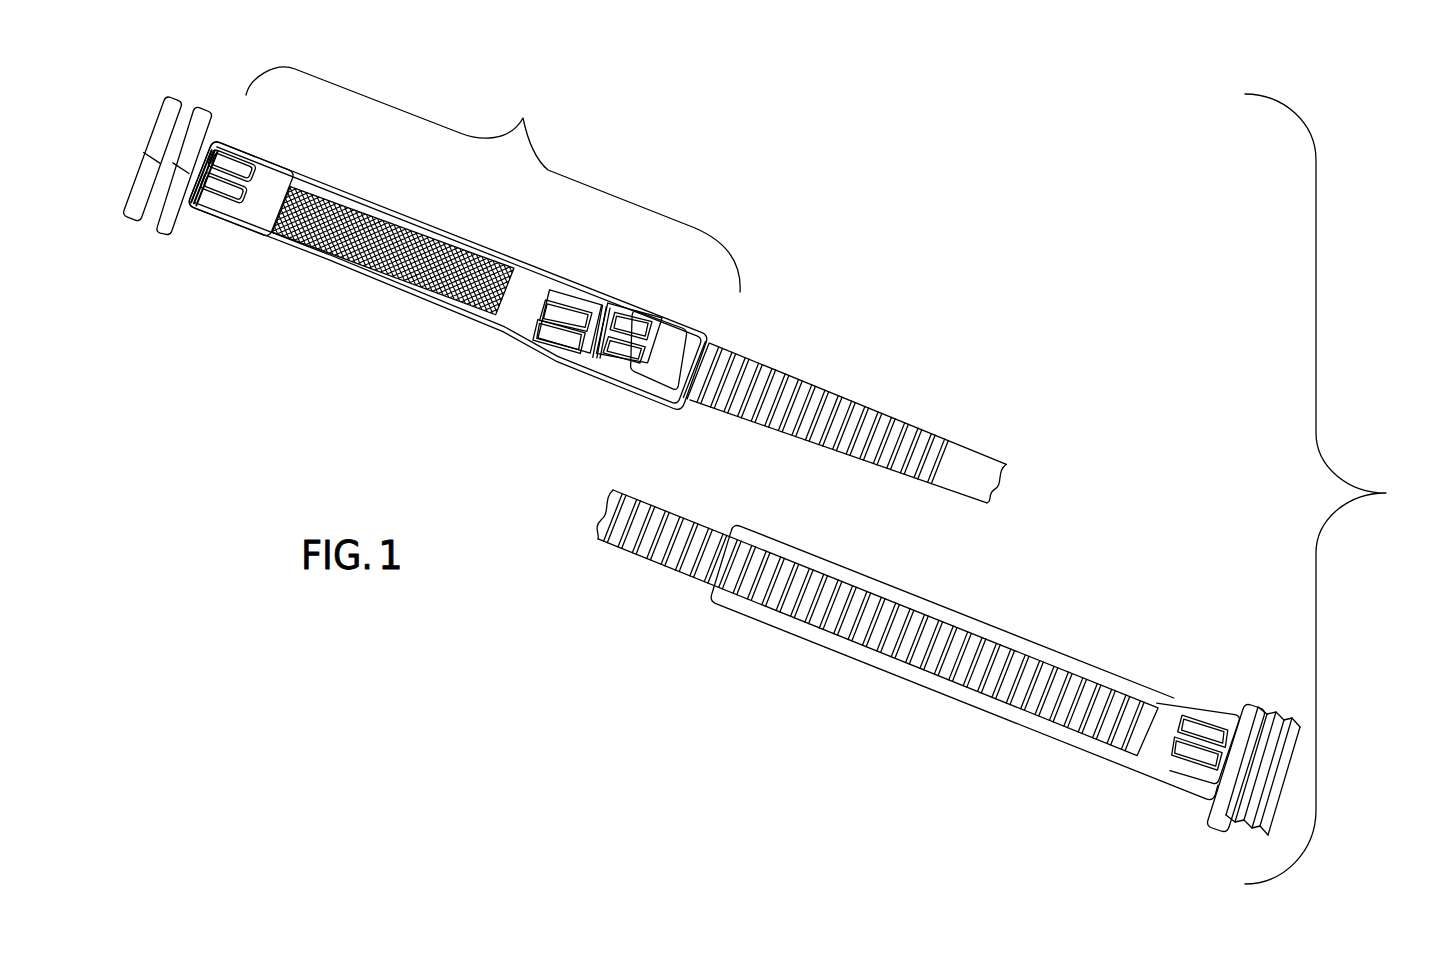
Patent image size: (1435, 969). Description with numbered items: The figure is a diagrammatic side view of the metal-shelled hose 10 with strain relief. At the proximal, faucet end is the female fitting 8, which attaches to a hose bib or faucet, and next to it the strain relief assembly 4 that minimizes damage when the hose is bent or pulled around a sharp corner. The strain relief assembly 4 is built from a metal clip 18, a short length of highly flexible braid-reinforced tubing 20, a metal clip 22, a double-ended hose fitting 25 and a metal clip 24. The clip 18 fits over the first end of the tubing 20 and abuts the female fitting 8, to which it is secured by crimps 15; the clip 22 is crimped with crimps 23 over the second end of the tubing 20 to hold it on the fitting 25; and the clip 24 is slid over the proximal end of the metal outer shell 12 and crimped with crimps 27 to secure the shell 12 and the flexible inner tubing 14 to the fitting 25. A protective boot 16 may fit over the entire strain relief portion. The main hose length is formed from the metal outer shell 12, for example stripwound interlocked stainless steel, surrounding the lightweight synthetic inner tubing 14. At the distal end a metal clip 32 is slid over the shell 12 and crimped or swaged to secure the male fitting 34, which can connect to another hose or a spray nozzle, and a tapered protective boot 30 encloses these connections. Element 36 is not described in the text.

The strain relief assembly 4 is at (538, 110).
The female fitting 8 is at (153, 203).
The metal-shelled hose 10 is at (1425, 502).
The metal outer shell 12 is at (797, 407).
The inner tubing 14 is at (973, 463).
The crimps 15 is at (215, 203).
The protective boot 16 is at (403, 218).
The metal clip 18 is at (267, 203).
The flexible tubing 20 is at (323, 238).
The metal clip 22 is at (513, 320).
The crimps 23 is at (578, 292).
The metal clip 24 is at (662, 338).
The double-ended hose fitting 25 is at (592, 338).
The crimps 27 is at (628, 318).
The protective boot 30 is at (753, 612).
The metal clip 32 is at (1158, 738).
The male fitting 34 is at (1185, 772).
The end clasp 36 is at (1238, 787).